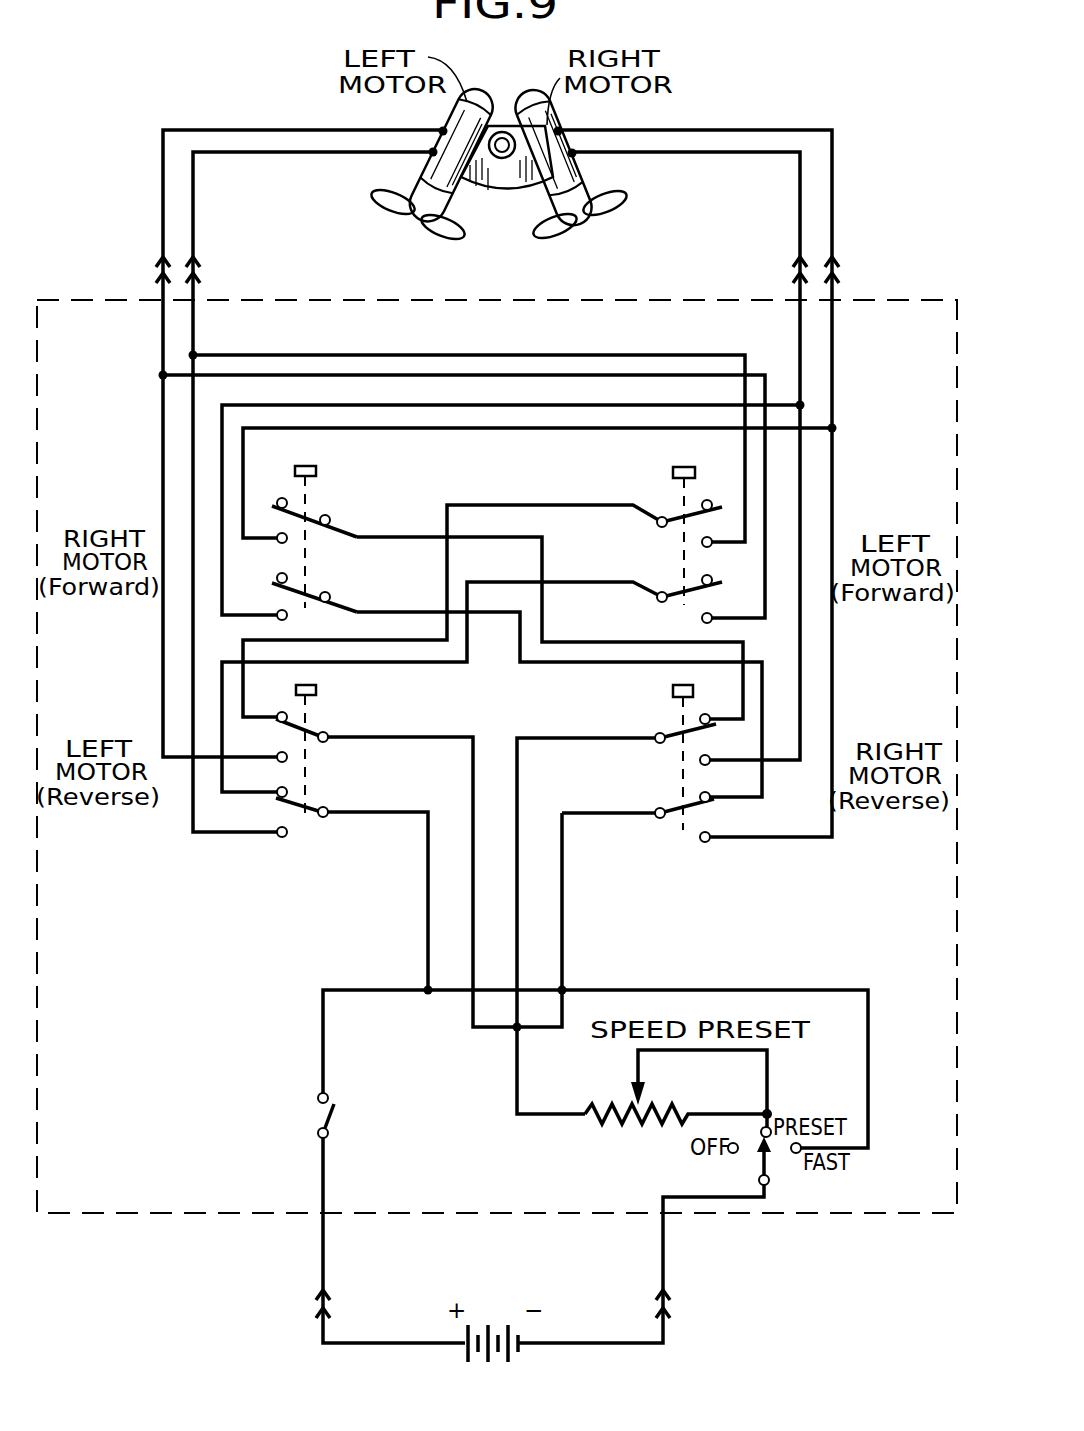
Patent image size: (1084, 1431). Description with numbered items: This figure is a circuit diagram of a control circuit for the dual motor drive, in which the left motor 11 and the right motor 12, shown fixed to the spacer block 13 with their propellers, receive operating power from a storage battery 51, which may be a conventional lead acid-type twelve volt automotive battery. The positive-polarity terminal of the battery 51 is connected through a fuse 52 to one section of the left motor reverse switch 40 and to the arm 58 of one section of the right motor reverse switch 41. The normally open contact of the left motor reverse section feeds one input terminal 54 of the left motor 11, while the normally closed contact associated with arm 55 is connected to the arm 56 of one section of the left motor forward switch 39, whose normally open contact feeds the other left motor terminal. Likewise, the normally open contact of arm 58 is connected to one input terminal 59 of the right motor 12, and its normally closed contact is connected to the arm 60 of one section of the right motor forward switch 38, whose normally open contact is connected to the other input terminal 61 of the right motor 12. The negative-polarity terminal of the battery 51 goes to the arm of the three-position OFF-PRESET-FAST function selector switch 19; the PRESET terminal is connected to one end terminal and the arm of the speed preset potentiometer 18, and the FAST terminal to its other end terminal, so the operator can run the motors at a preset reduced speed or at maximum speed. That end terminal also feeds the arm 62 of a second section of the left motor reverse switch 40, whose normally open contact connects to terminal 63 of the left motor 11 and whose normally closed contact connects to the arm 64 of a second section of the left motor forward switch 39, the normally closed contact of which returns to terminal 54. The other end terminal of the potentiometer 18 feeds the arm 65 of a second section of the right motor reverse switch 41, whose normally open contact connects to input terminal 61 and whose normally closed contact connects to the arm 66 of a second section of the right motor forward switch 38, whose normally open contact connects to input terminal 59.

The left motor 11 is at (460, 115).
The right motor 12 is at (555, 122).
The spacer block 13 is at (492, 182).
The speed preset potentiometer 18 is at (640, 1074).
The function selector switch 19 is at (768, 1165).
The right motor forward switch 38 is at (305, 486).
The left motor forward switch 39 is at (680, 486).
The left motor reverse switch 40 is at (305, 703).
The right motor reverse switch 41 is at (683, 707).
The storage battery 51 is at (508, 1360).
The fuse 52 is at (332, 1106).
The input terminal of left motor 54 is at (422, 156).
The arm of left motor reverse switch section 55 is at (310, 808).
The arm of left motor forward switch section 56 is at (678, 590).
The arm of right motor reverse switch section 58 is at (672, 747).
The input terminal of right motor 59 is at (585, 156).
The arm of right motor forward switch section 60 is at (310, 530).
The input terminal of right motor 61 is at (580, 131).
The arm of second left motor reverse switch section 62 is at (310, 742).
The terminal of left motor 63 is at (432, 131).
The arm of second left motor forward switch section 64 is at (670, 527).
The arm of second right motor reverse switch section 65 is at (672, 820).
The arm of second right motor forward switch section 66 is at (310, 606).